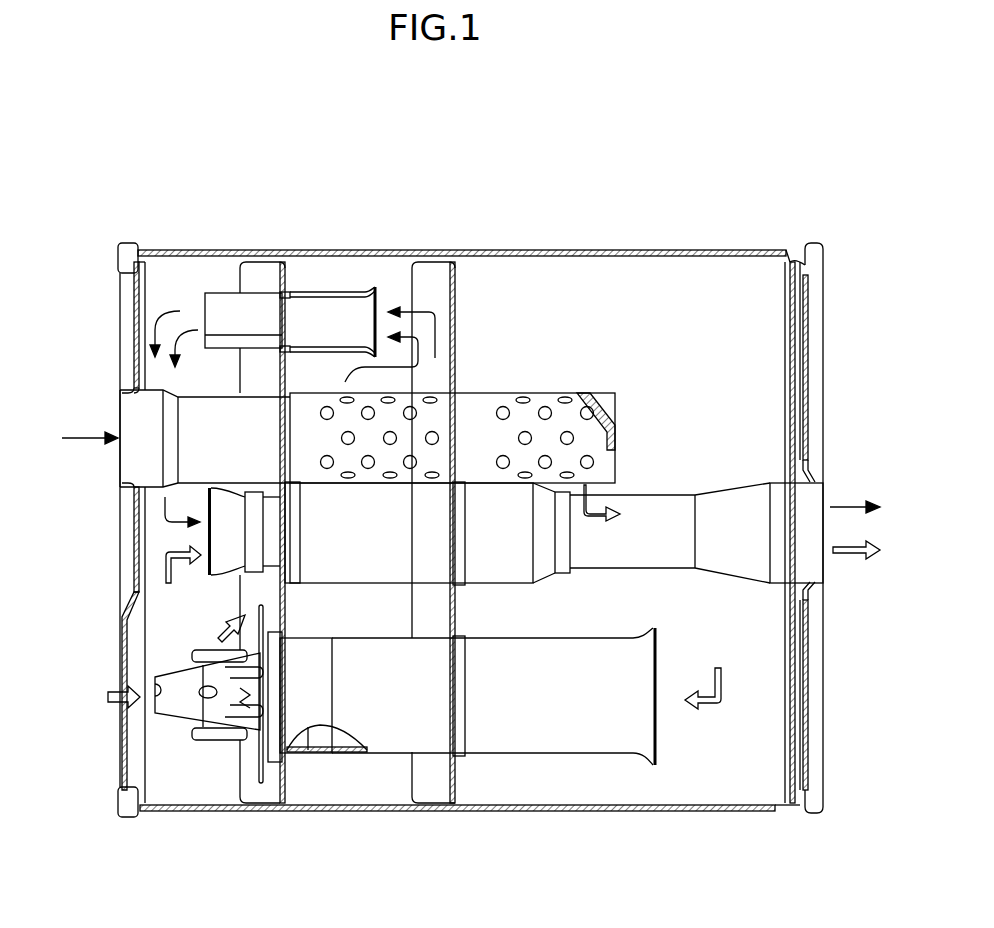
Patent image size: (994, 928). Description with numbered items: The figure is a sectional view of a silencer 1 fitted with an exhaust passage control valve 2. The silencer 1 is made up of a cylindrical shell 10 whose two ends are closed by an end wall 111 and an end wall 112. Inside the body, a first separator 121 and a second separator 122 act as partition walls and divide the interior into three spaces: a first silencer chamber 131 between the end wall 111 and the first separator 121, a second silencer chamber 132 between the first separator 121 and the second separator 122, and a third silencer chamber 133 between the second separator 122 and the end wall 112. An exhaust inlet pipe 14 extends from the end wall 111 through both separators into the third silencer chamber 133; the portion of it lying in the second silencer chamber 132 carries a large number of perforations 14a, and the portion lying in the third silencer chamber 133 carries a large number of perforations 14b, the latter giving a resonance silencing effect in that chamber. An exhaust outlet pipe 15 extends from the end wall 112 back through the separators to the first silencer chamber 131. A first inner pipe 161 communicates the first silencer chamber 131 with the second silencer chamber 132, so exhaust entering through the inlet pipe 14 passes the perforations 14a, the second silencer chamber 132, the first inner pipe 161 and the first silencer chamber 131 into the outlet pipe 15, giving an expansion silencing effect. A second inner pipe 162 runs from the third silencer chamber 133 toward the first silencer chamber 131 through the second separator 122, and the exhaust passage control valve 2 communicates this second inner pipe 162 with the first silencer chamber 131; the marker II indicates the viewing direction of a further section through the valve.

The silencer 1 is at (763, 184).
The exhaust passage control valve 2 is at (183, 750).
The cylindrical shell 10 is at (505, 812).
The end wall 111 is at (137, 540).
The end wall 112 is at (825, 665).
The first separator 121 is at (307, 262).
The second separator 122 is at (458, 283).
The first silencer chamber 131 is at (175, 275).
The second silencer chamber 132 is at (360, 275).
The third silencer chamber 133 is at (612, 283).
The exhaust inlet pipe 14 is at (135, 415).
The perforations 14a is at (326, 465).
The perforations 14b is at (547, 405).
The exhaust outlet pipe 15 is at (815, 495).
The first inner pipe 161 is at (246, 345).
The second inner pipe 162 is at (595, 735).
The section line II is at (111, 697).